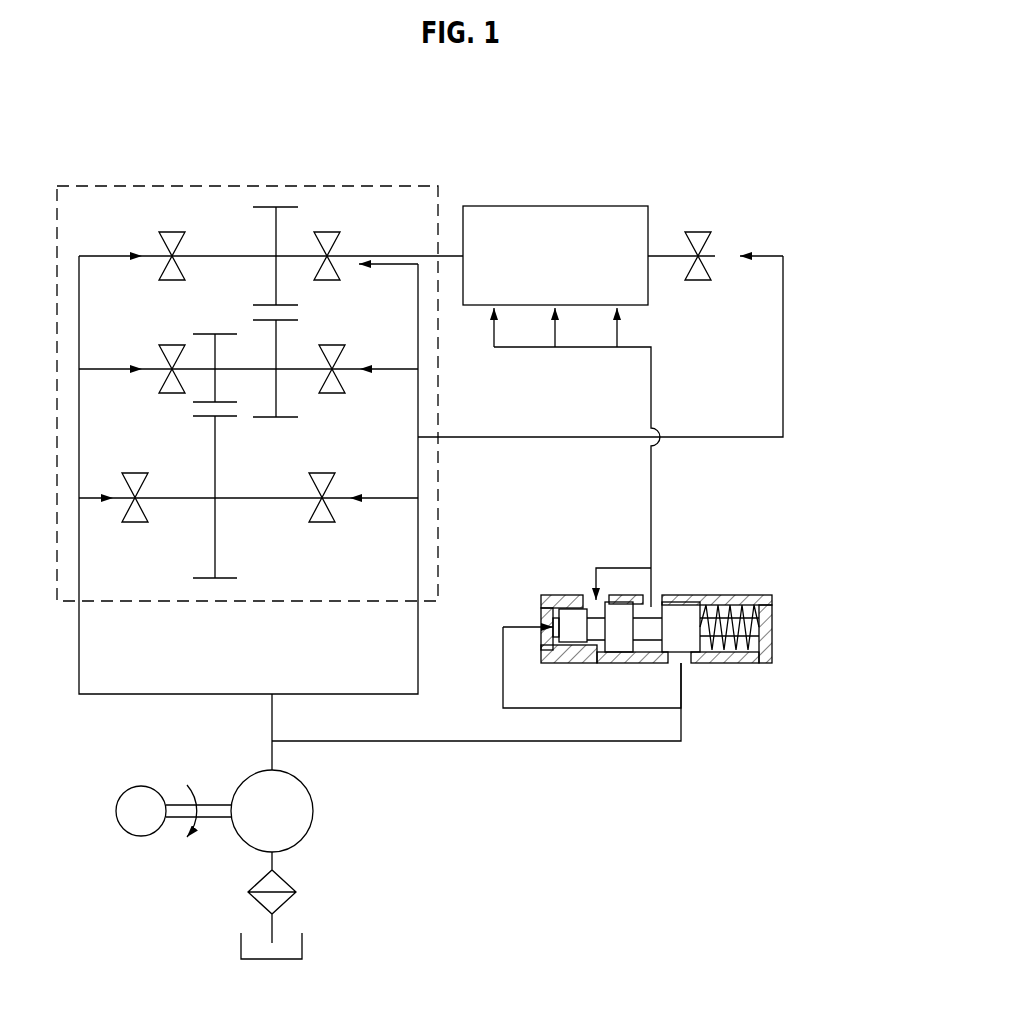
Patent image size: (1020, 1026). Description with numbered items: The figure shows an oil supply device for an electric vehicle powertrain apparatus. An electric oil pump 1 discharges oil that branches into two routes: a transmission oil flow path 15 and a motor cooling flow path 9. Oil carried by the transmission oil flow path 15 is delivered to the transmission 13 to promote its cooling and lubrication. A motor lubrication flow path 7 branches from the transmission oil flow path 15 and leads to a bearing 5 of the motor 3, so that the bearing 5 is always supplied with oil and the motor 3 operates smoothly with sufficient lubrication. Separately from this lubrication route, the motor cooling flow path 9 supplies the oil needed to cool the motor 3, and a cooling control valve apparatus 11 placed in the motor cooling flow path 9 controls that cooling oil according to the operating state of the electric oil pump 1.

The electric oil pump 1 is at (317, 832).
The motor 3 is at (587, 206).
The bearing 5 is at (702, 232).
The motor lubrication flow path 7 is at (783, 365).
The motor cooling flow path 9 is at (545, 741).
The cooling control valve apparatus 11 is at (752, 590).
The transmission 13 is at (187, 186).
The transmission oil flow path 15 is at (272, 721).